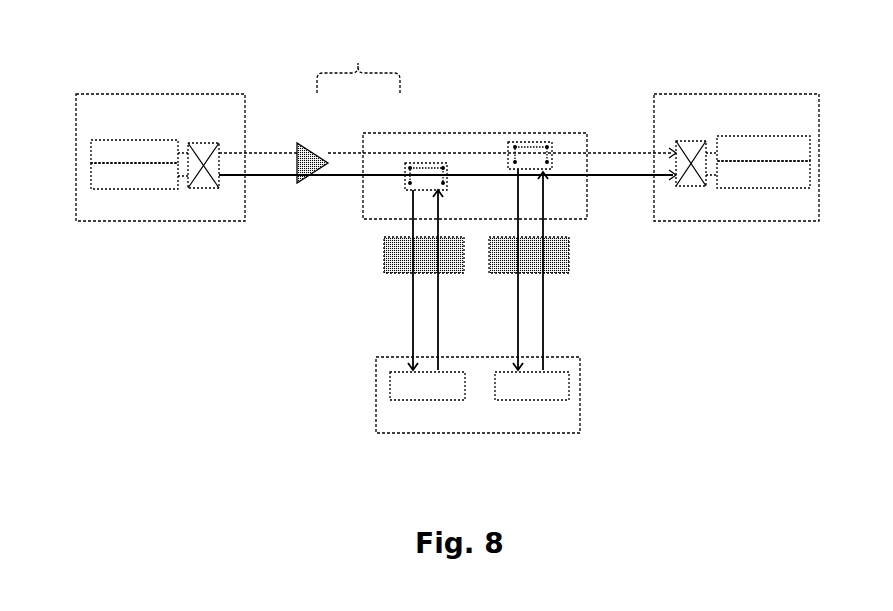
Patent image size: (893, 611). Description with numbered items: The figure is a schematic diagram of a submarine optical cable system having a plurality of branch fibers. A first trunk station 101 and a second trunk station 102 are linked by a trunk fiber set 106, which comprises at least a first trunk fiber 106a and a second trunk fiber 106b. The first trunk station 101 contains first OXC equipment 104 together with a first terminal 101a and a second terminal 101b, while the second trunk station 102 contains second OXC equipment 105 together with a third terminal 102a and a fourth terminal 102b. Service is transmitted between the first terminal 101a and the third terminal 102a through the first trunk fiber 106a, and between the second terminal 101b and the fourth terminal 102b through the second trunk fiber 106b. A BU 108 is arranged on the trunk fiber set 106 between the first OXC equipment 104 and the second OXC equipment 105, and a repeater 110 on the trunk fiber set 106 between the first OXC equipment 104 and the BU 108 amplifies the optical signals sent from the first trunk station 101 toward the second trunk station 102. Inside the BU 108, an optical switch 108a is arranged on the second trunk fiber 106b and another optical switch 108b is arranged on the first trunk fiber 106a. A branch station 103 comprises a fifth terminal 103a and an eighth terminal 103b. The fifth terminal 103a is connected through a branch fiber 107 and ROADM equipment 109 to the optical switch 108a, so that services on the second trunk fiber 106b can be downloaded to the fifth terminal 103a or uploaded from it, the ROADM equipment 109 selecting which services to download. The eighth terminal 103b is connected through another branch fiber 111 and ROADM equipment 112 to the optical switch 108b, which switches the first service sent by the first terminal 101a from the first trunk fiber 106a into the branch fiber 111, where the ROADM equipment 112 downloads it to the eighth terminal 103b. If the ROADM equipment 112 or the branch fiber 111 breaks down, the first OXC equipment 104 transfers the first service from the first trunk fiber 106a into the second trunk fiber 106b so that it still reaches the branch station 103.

The first trunk station 101 is at (110, 94).
The first terminal 101a is at (91, 152).
The second terminal 101b is at (91, 182).
The second trunk station 102 is at (743, 94).
The third terminal 102a is at (811, 147).
The fourth terminal 102b is at (811, 177).
The branch station 103 is at (433, 433).
The fifth terminal 103a is at (390, 385).
The eighth terminal 103b is at (570, 380).
The first OXC equipment 104 is at (194, 143).
The second OXC equipment 105 is at (703, 142).
The trunk fiber set 106 is at (358, 67).
The first trunk fiber 106a is at (280, 152).
The second trunk fiber 106b is at (330, 174).
The branch fiber 107 is at (412, 318).
The BU 108 is at (448, 133).
The optical switch 108a is at (403, 184).
The optical switch 108b is at (525, 142).
The ROADM equipment 109 is at (455, 273).
The repeater 110 is at (297, 182).
The branch fiber 111 is at (545, 307).
The ROADM equipment 112 is at (560, 273).